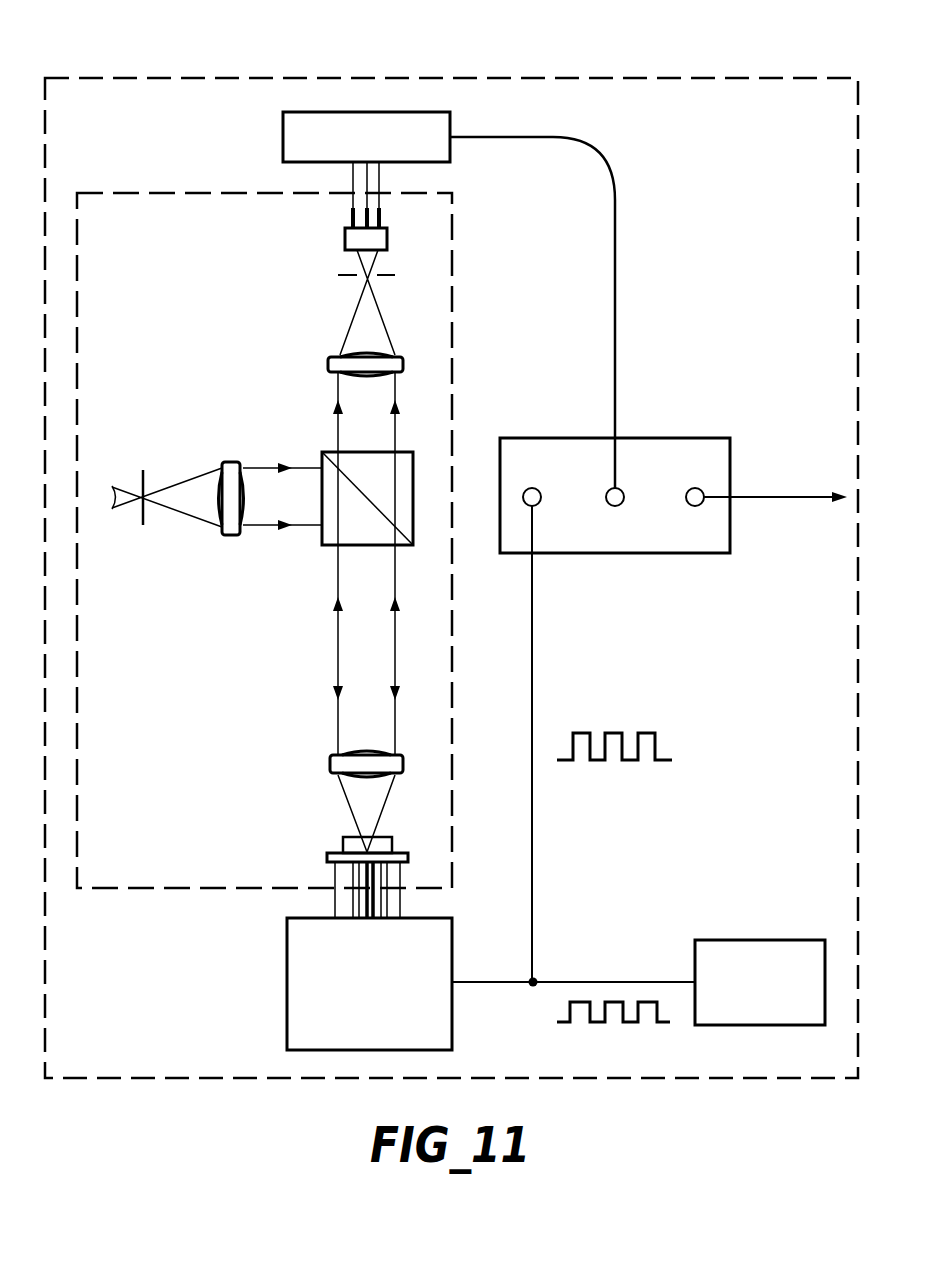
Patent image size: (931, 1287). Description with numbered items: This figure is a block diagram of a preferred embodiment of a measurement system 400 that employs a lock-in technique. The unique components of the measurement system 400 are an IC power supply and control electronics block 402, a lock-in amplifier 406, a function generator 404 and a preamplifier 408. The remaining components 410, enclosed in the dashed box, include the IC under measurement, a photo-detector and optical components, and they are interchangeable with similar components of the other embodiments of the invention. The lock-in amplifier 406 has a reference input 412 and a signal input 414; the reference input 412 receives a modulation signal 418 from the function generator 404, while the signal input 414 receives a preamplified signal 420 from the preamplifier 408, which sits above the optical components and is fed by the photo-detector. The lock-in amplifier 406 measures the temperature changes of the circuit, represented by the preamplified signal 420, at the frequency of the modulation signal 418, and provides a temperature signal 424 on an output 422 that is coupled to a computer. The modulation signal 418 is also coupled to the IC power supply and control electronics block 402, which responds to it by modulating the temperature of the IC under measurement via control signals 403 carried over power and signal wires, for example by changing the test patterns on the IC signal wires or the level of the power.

The measurement system 400 is at (499, 72).
The IC power supply and control electronics block 402 is at (287, 977).
The control signals 403 is at (336, 898).
The function generator 404 is at (755, 940).
The lock-in amplifier 406 is at (665, 438).
The preamplifier 408 is at (283, 136).
The remaining components 410 is at (462, 272).
The reference input 412 is at (532, 488).
The signal input 414 is at (615, 506).
The modulation signal 418 is at (613, 978).
The preamplified signal 420 is at (615, 200).
The output 422 is at (695, 506).
The temperature signal 424 is at (780, 499).